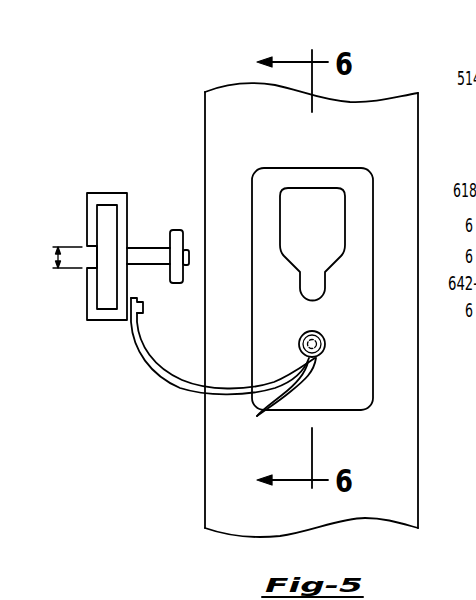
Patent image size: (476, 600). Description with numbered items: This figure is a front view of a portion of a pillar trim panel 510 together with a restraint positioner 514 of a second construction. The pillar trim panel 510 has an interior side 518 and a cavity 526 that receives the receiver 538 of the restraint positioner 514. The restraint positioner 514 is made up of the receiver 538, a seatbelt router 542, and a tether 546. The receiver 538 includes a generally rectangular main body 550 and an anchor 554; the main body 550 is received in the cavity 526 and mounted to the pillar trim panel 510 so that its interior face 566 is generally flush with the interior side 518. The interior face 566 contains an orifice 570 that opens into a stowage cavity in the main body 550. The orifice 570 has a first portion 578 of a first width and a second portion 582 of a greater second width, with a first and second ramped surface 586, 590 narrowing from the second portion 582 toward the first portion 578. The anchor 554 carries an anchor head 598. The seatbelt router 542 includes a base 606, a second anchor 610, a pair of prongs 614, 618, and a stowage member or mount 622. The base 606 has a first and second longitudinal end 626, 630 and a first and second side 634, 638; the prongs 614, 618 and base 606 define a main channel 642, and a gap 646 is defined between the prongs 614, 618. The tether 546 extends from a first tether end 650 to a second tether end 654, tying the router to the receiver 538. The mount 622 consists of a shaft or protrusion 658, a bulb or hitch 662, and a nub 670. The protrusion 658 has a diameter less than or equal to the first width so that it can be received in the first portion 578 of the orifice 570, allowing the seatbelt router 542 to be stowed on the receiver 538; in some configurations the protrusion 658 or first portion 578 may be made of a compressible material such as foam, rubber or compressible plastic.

The pillar trim panel 510 is at (393, 115).
The restraint positioner 514 is at (170, 138).
The interior side 518 is at (363, 117).
The cavity 526 is at (320, 168).
The receiver 538 is at (360, 373).
The seatbelt router 542 is at (87, 193).
The tether 546 is at (177, 389).
The main body 550 is at (355, 337).
The anchor 554 is at (318, 333).
The interior face 566 is at (318, 396).
The orifice 570 is at (282, 190).
The first portion 578 is at (325, 279).
The second portion 582 is at (345, 240).
The first ramped surface 586 is at (333, 237).
The second ramped surface 590 is at (296, 247).
The anchor head 598 is at (306, 358).
The base 606 is at (128, 220).
The second anchor 610 is at (143, 302).
The prong 614 is at (87, 313).
The prong 618 is at (87, 218).
The stowage member or mount 622 is at (175, 229).
The first longitudinal end 626 is at (125, 322).
The second longitudinal end 630 is at (125, 193).
The first side 634 is at (117, 278).
The second side 638 is at (128, 203).
The main channel 642 is at (102, 205).
The gap 646 is at (58, 258).
The first tether end 650 is at (257, 413).
The second tether end 654 is at (134, 337).
The shaft or protrusion 658 is at (150, 250).
The bulb or hitch 662 is at (175, 284).
The nub 670 is at (189, 257).